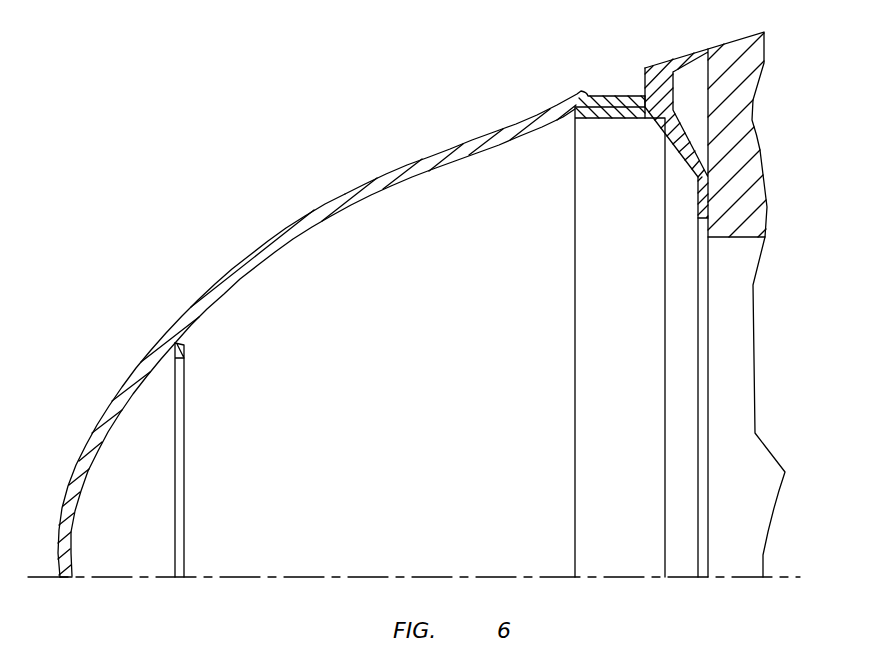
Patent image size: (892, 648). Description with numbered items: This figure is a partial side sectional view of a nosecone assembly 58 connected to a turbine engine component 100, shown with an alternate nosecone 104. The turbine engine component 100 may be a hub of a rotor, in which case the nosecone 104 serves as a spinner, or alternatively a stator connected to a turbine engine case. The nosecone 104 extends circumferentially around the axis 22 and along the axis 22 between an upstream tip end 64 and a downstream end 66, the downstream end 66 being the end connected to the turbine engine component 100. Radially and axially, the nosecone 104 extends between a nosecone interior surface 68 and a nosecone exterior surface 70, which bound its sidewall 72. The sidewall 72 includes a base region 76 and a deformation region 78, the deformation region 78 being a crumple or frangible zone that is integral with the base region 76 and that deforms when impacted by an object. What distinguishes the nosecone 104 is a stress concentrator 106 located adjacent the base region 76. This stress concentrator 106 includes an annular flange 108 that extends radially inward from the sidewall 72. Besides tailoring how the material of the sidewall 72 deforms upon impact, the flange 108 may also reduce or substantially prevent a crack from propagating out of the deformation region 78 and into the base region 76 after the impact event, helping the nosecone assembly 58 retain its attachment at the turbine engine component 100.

The axis 22 is at (790, 566).
The nosecone assembly 58 is at (91, 195).
The upstream tip end 64 is at (69, 579).
The downstream end 66 is at (638, 96).
The nosecone interior surface 68 is at (455, 160).
The nosecone exterior surface 70 is at (456, 140).
The sidewall 72 is at (378, 182).
The base region 76 is at (585, 62).
The deformation region 78 is at (62, 63).
The turbine engine component 100 is at (758, 110).
The nosecone 104 is at (318, 208).
The stress concentrator 106 is at (195, 350).
The annular flange 108 is at (185, 346).